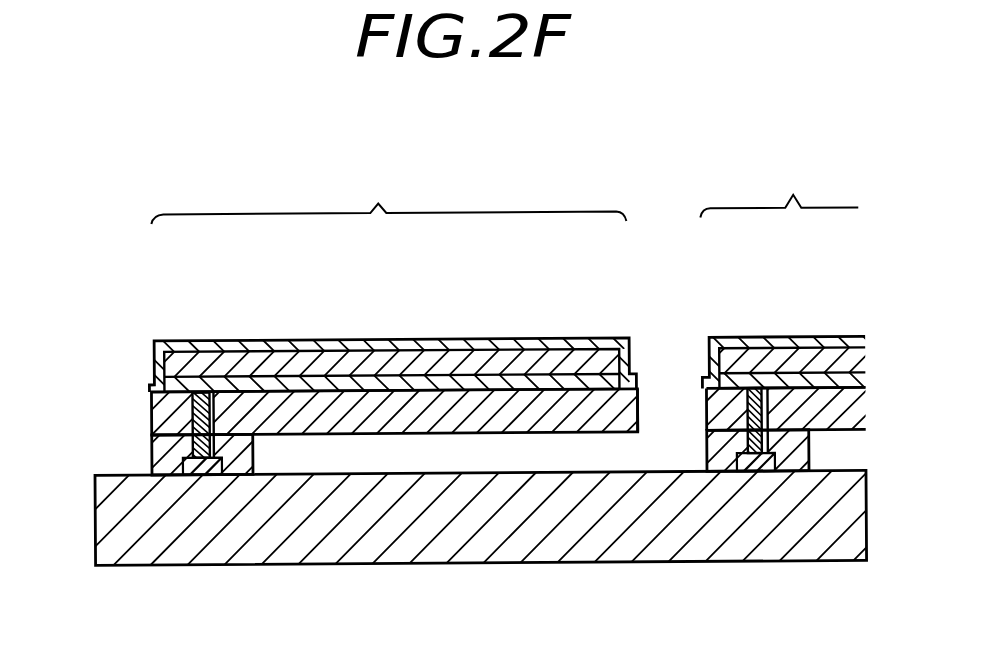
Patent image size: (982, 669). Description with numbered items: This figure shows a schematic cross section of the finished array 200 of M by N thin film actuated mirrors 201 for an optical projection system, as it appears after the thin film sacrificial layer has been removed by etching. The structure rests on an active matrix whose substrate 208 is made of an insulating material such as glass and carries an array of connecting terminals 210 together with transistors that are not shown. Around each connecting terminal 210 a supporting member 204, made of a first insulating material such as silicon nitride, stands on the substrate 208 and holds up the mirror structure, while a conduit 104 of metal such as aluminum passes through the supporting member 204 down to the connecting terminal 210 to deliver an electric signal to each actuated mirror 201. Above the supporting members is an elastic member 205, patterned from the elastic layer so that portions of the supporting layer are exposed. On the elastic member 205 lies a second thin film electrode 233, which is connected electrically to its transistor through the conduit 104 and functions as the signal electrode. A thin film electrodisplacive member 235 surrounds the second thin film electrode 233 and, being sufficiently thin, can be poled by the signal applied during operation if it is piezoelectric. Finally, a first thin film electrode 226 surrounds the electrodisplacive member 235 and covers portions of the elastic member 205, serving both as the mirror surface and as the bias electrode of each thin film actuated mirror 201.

The array of M×N thin film actuated mirrors 200 is at (580, 170).
The thin film actuated mirror 201 is at (504, 191).
The substrate 208 is at (588, 519).
The connecting terminal 210 is at (707, 411).
The elastic member 205 is at (432, 406).
The conduit 104 is at (200, 400).
The supporting member 204 is at (232, 453).
The thin film electrodisplacive member 235 is at (292, 364).
The second thin film electrode 233 is at (382, 378).
The first thin film electrode 226 is at (163, 345).